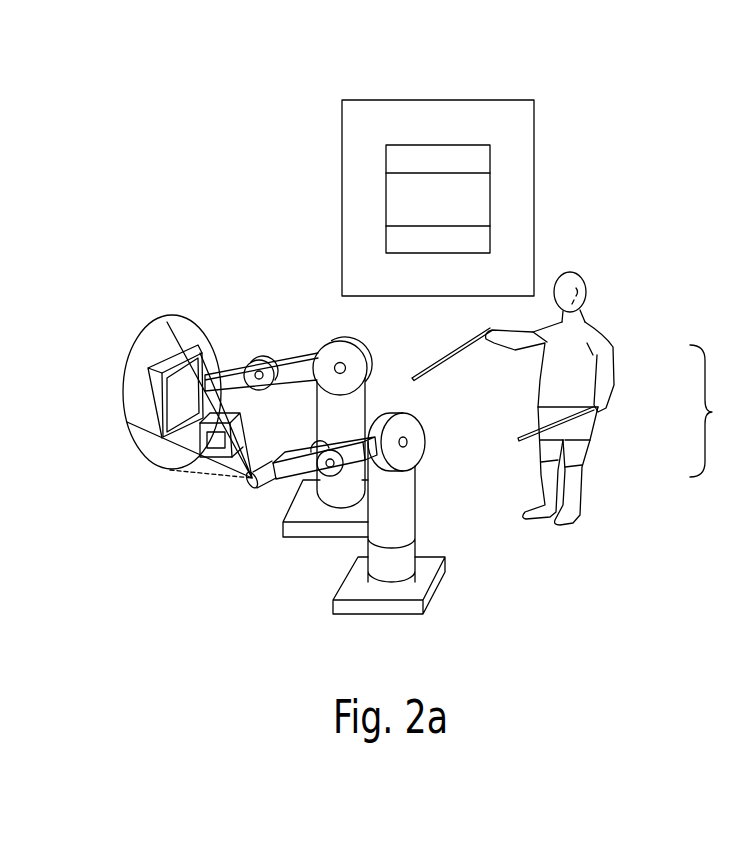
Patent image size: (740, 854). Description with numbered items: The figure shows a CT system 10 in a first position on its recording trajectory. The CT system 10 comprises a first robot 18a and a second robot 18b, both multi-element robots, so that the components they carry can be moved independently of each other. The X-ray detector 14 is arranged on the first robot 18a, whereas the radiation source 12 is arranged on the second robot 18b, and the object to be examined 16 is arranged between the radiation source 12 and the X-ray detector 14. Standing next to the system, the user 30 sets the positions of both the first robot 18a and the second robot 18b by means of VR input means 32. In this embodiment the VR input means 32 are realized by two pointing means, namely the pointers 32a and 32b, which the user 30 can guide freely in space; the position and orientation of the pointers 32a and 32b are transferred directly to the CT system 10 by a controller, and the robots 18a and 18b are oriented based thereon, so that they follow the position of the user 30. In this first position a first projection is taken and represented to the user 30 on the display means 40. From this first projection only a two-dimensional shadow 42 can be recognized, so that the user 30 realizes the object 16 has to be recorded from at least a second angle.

The CT system 10 is at (180, 247).
The radiation source 12 is at (257, 493).
The X-ray detector 14 is at (173, 394).
The object to be examined 16 is at (217, 463).
The first robot 18a is at (333, 347).
The second robot 18b is at (405, 522).
The user 30 is at (577, 318).
The VR input means 32 is at (715, 411).
The first pointer 32a is at (460, 355).
The second pointer 32b is at (568, 430).
The display means 40 is at (493, 113).
The shadow 42 is at (468, 173).